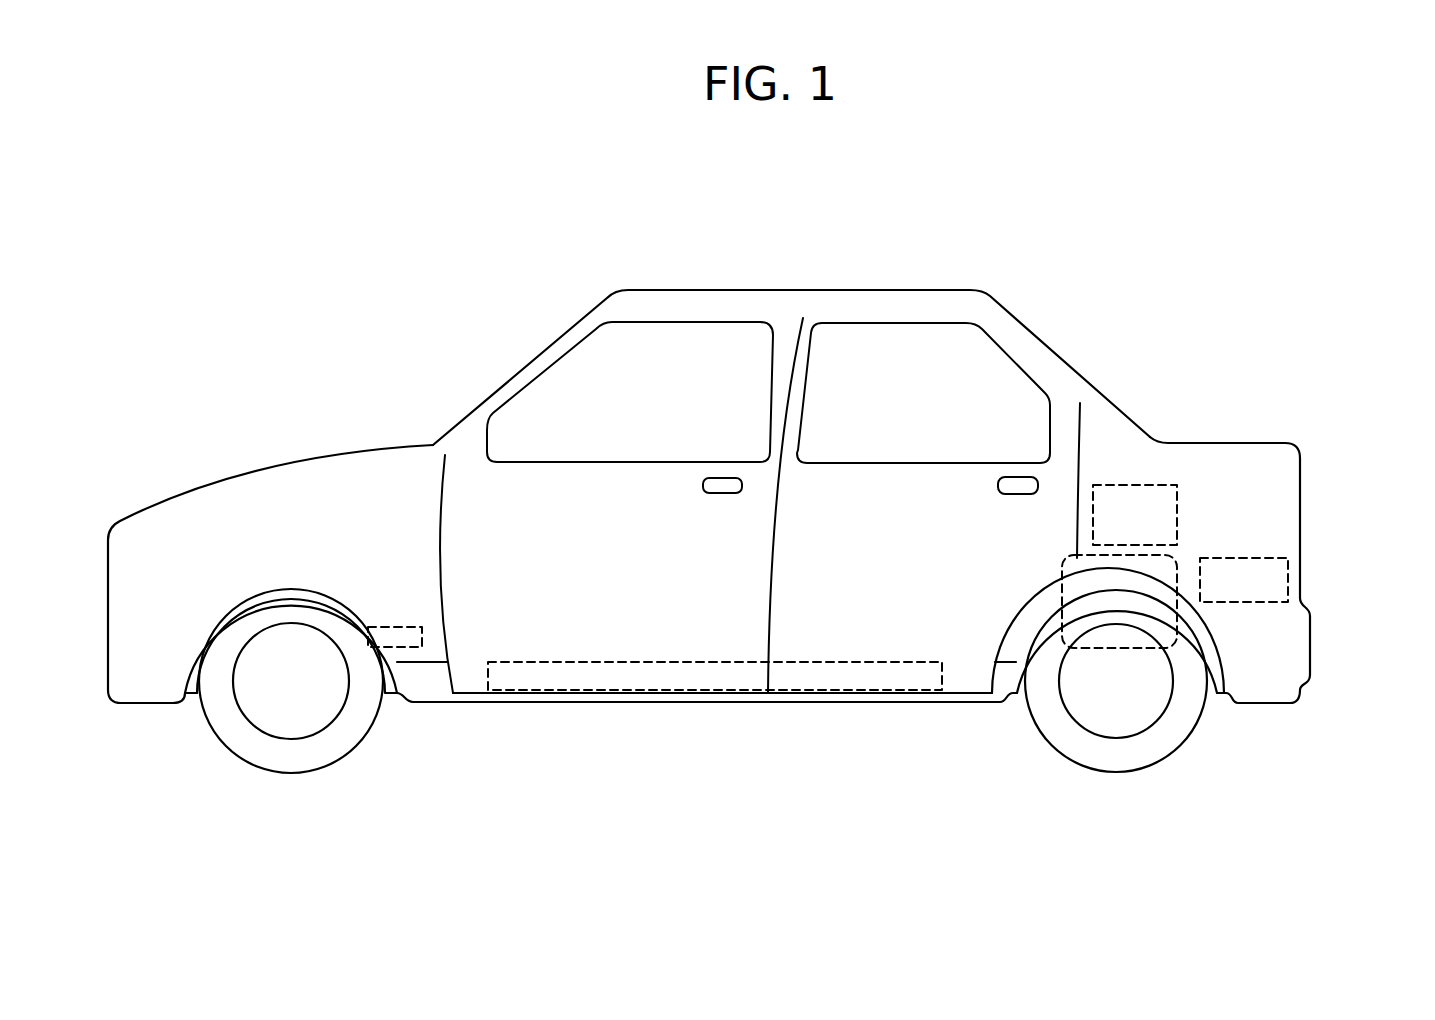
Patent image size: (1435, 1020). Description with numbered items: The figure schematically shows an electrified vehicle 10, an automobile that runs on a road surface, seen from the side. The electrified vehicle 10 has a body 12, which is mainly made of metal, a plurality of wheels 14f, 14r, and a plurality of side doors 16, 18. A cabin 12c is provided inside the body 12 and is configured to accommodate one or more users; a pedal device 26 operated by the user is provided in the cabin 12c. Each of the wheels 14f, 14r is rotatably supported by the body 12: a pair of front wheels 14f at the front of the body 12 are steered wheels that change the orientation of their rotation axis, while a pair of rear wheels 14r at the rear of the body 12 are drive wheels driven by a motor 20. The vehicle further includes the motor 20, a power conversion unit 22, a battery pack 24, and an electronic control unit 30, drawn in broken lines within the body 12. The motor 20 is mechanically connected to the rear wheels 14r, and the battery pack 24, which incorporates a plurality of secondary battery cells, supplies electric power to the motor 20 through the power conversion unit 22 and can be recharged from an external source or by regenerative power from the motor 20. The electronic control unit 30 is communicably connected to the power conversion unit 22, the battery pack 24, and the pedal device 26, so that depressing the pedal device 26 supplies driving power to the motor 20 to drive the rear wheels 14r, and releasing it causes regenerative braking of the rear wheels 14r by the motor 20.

The electrified vehicle 10 is at (1240, 278).
The body 12 is at (810, 290).
The cabin 12c is at (583, 390).
The front wheels 14f is at (253, 740).
The rear wheels 14r is at (1117, 750).
The side door 16 is at (500, 535).
The side door 18 is at (937, 510).
The motor 20 is at (1178, 635).
The power conversion unit 22 is at (1180, 516).
The battery pack 24 is at (825, 675).
The pedal device 26 is at (415, 615).
The electronic control unit 30 is at (1290, 580).